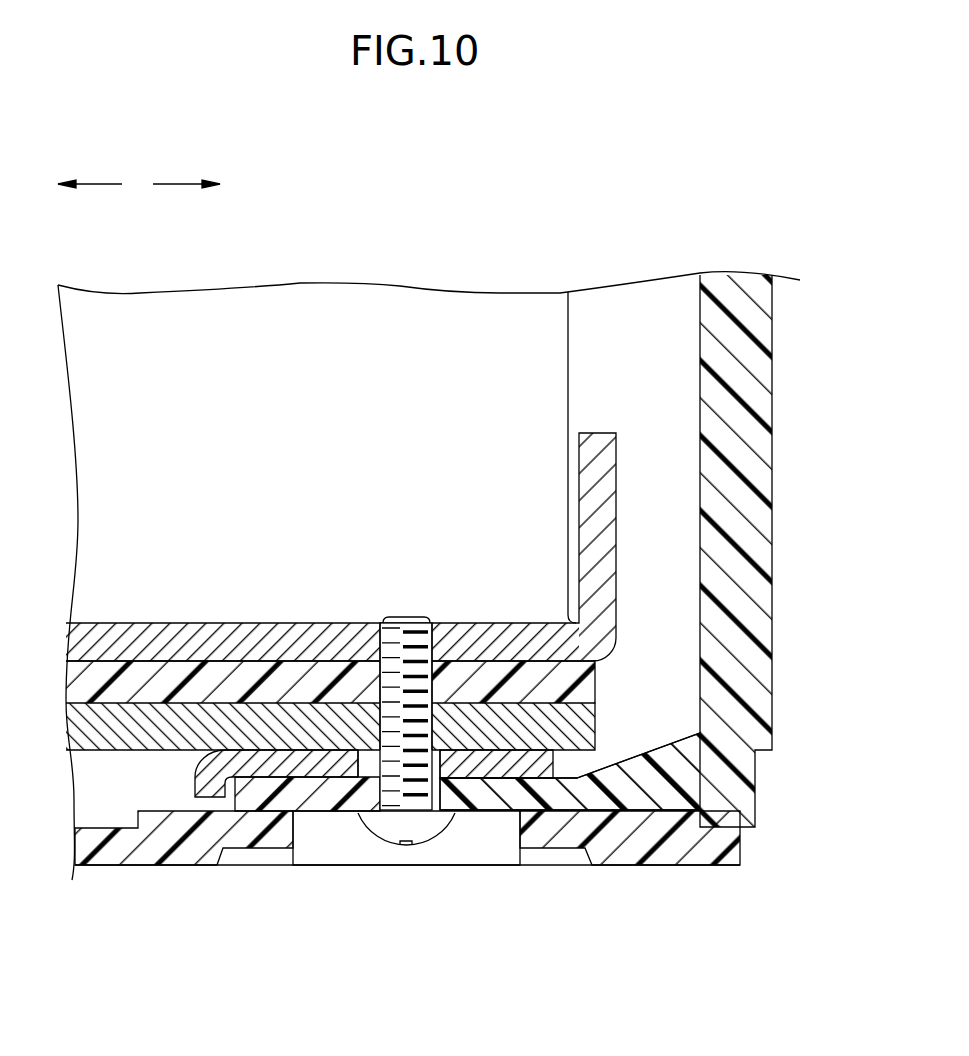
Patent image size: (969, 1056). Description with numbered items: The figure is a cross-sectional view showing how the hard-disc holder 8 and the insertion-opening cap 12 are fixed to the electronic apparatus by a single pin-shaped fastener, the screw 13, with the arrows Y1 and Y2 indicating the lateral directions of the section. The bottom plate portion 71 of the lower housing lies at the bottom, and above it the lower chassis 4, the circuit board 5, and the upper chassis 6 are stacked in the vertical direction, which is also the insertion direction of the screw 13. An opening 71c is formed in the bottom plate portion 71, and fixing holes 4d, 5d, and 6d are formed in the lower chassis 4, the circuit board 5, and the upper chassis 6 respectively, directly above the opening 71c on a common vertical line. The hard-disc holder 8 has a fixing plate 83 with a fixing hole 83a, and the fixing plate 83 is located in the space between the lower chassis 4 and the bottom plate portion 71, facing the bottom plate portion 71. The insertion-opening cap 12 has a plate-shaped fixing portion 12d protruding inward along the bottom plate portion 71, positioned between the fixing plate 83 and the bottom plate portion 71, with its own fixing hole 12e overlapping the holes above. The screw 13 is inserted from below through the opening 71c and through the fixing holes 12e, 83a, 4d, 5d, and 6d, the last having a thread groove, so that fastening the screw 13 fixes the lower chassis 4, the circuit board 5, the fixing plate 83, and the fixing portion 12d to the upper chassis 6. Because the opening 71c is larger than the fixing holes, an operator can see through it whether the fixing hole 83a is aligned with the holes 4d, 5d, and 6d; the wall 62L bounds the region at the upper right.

The lower chassis 4 is at (103, 725).
The circuit board 5 is at (158, 688).
The upper chassis 6 is at (213, 643).
The fixing hole 4d is at (388, 728).
The fixing hole 5d is at (418, 690).
The fixing hole 6d is at (385, 645).
The hard-disc holder 8 is at (273, 782).
The insertion-opening cap 12 is at (752, 457).
The fixing portion 12d is at (563, 793).
The fixing hole 12e is at (400, 803).
The screw 13 is at (412, 802).
The left partition wall 62L is at (547, 353).
The bottom plate portion 71 is at (188, 847).
The opening 71c is at (520, 840).
The fixing plate 83 is at (338, 763).
The fixing hole 83a is at (442, 763).
The direction Y1 is at (100, 184).
The direction Y2 is at (176, 184).